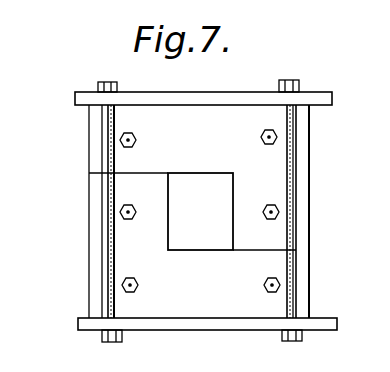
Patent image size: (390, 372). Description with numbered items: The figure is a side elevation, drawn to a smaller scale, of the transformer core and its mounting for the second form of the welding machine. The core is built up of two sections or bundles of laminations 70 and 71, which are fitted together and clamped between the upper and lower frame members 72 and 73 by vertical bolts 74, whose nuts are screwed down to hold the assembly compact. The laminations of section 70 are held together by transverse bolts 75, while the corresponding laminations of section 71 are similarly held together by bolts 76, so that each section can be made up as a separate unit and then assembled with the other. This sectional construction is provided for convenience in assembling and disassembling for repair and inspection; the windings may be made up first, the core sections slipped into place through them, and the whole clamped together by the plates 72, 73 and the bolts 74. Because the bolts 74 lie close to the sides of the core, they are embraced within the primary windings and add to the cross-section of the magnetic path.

The section of laminations 70 is at (268, 173).
The section of laminations 71 is at (213, 298).
The frame member 72 is at (82, 100).
The frame member 73 is at (82, 325).
The vertical bolts 74 is at (100, 80).
The transverse bolts 75 is at (120, 142).
The bolts 76 is at (120, 211).